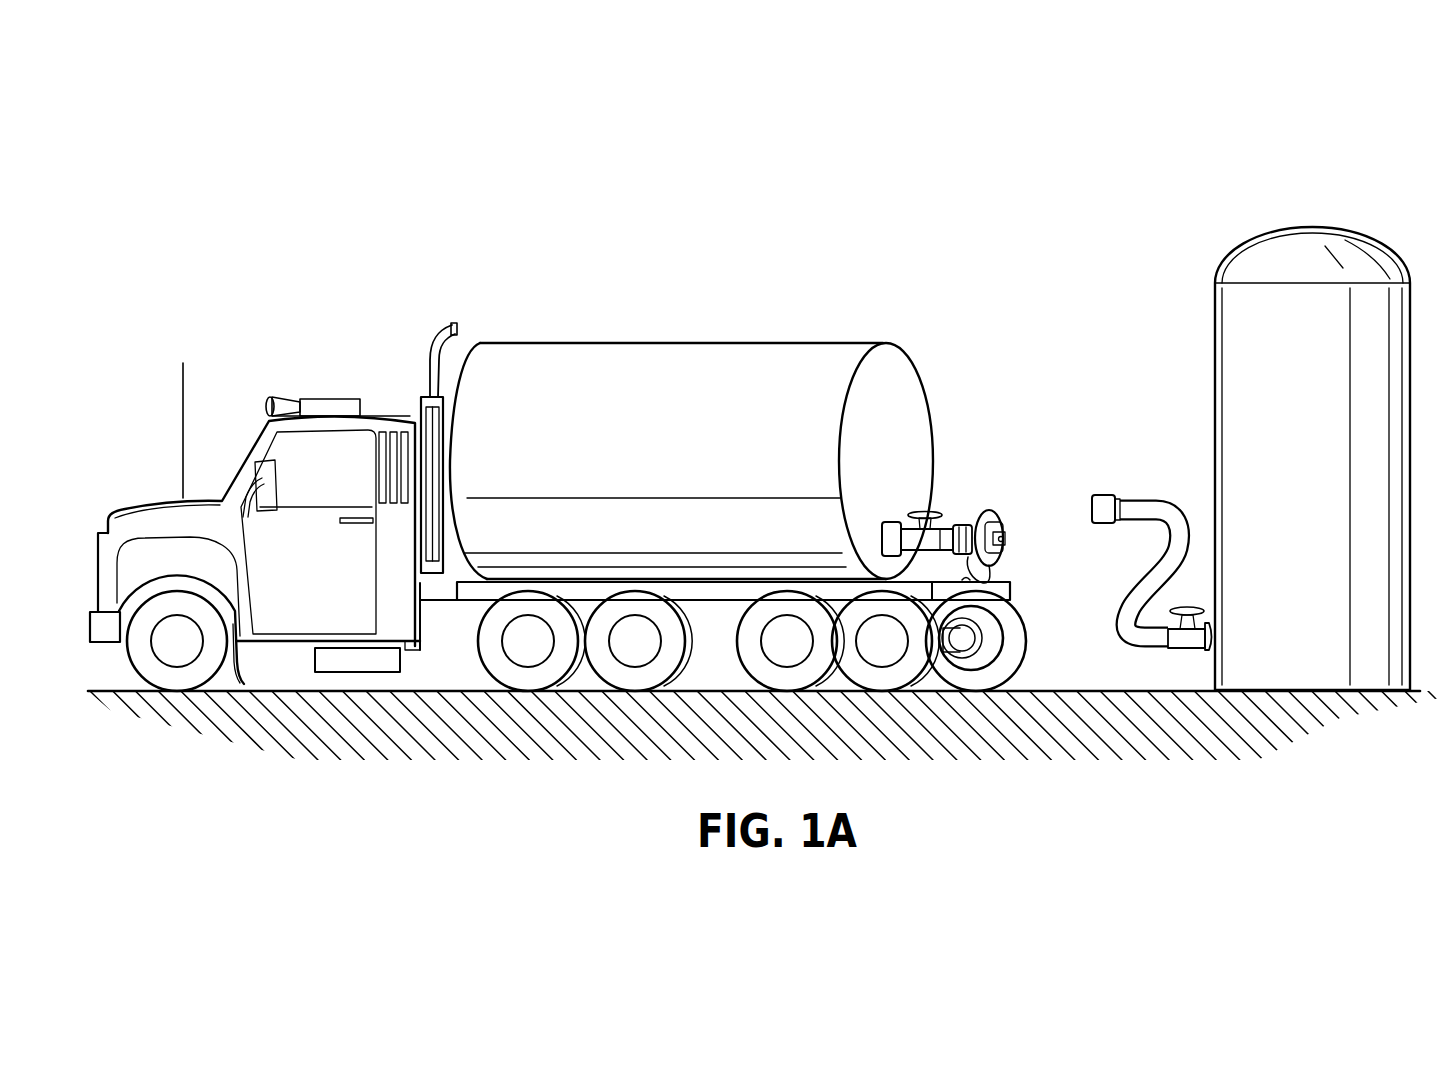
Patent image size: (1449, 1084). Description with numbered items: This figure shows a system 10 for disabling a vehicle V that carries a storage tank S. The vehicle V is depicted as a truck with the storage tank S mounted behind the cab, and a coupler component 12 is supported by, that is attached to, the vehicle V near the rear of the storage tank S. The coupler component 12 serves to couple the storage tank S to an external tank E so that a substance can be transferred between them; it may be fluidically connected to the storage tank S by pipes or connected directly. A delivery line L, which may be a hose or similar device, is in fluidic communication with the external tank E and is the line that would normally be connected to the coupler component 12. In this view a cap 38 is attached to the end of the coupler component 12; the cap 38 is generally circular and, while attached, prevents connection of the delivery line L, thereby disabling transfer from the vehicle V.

The system 10 is at (1066, 400).
The coupler component 12 is at (964, 518).
The cap 38 is at (1006, 538).
The vehicle V is at (392, 418).
The storage tank S is at (611, 343).
The delivery line L is at (1136, 500).
The external tank E is at (1309, 227).